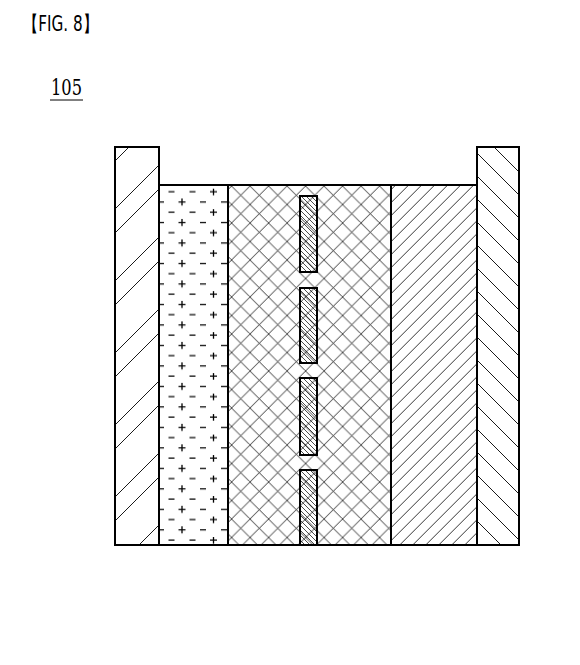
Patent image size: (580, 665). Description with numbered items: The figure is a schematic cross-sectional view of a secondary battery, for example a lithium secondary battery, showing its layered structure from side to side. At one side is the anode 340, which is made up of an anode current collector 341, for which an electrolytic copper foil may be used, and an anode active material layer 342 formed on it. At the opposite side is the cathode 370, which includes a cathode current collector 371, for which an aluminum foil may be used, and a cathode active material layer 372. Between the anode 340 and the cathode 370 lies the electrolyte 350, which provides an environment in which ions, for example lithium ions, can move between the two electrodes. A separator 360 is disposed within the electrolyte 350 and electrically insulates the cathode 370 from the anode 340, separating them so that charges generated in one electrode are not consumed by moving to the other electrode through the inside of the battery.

The anode 340 is at (171, 392).
The anode current collector 341 is at (142, 537).
The anode active material layer 342 is at (206, 534).
The electrolyte 350 is at (252, 538).
The separator 360 is at (309, 537).
The cathode 370 is at (455, 392).
The cathode current collector 371 is at (505, 537).
The cathode active material layer 372 is at (442, 535).